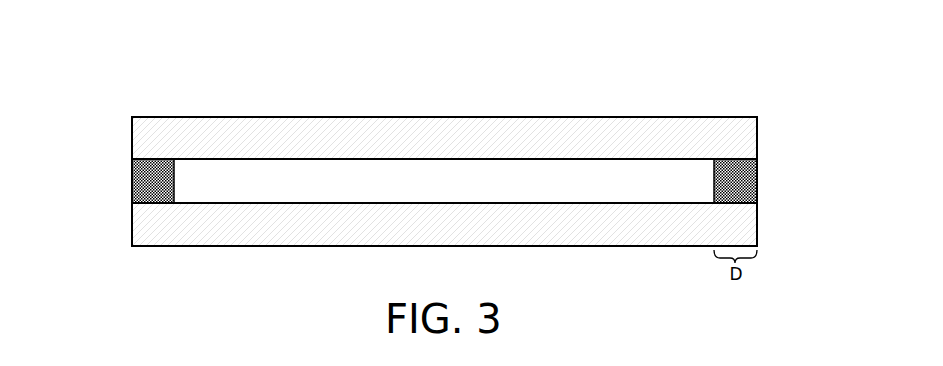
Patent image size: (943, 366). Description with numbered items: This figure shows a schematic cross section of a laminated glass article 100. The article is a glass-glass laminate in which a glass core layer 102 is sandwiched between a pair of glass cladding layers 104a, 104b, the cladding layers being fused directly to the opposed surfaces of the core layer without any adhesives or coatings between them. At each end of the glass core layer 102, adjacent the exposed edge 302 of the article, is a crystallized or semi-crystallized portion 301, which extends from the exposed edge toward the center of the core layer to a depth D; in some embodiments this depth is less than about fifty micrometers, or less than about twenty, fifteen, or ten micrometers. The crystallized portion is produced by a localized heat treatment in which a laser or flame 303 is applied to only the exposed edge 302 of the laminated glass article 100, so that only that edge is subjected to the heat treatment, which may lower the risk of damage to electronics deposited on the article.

The laminated glass article 100 is at (130, 112).
The glass cladding layer 104a is at (132, 139).
The glass cladding layer 104b is at (132, 232).
The glass core layer 102 is at (563, 177).
The crystallized or semi-crystallized portion 301 is at (162, 158).
The laser or flame 303 is at (757, 179).
The exposed edge 302 is at (757, 217).